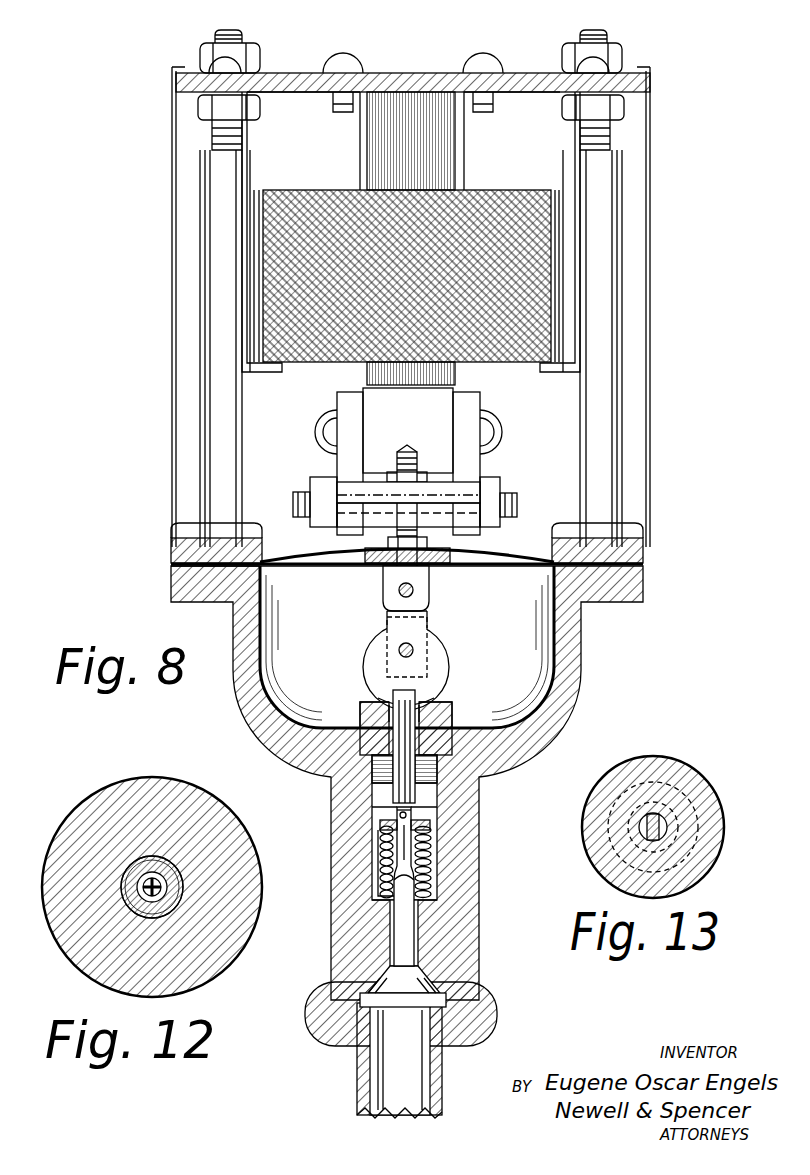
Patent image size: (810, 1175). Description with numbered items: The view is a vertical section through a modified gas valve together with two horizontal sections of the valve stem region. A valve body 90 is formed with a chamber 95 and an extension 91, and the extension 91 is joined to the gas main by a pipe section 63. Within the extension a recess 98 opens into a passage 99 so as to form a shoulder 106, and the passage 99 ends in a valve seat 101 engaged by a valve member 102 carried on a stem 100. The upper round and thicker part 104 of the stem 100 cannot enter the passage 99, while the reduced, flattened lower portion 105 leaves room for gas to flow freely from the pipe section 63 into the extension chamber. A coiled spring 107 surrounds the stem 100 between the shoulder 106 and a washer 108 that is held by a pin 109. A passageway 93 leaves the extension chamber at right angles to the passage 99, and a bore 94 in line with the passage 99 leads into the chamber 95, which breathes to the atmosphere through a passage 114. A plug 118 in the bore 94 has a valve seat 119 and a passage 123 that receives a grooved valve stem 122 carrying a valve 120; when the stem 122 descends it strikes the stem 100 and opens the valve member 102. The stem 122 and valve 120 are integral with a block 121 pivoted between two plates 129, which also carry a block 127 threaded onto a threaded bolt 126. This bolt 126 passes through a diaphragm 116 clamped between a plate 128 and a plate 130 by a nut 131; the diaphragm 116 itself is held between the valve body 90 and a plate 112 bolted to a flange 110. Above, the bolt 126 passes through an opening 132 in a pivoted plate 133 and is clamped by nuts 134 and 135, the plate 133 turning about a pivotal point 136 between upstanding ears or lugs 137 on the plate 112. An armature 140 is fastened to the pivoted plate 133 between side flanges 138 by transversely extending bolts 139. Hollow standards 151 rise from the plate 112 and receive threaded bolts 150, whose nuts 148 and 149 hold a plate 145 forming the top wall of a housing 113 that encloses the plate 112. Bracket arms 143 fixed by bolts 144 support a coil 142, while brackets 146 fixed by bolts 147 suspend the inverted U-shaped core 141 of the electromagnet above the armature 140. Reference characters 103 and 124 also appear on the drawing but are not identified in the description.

In FIG. 8, the pipe section 63 is at (357, 1078).
In FIG. 8, the valve body 90 is at (300, 625).
In FIG. 12, the valve body 90 is at (212, 966).
In FIG. 8, the extension 91 is at (490, 1006).
In FIG. 8, the passageway 93 is at (437, 808).
In FIG. 8, the bore 94 is at (375, 770).
In FIG. 8, the chamber 95 is at (497, 656).
In FIG. 8, the recess 98 is at (430, 856).
In FIG. 8, the passage 99 is at (420, 926).
In FIG. 13, the passage 99 is at (668, 825).
In FIG. 8, the stem 100 is at (397, 813).
In FIG. 8, the valve seat 101 is at (395, 975).
In FIG. 8, the valve member 102 is at (380, 988).
In FIG. 13, the valve member 102 is at (637, 810).
In FIG. 8, the valve disc 103 is at (345, 998).
In FIG. 13, the valve disc 103 is at (692, 796).
In FIG. 8, the upper round and thicker part 104 is at (397, 866).
In FIG. 8, the lower portion 105 is at (404, 928).
In FIG. 13, the lower portion 105 is at (622, 836).
In FIG. 8, the shoulder 106 is at (380, 898).
In FIG. 8, the coiled spring 107 is at (385, 848).
In FIG. 8, the washer 108 is at (430, 830).
In FIG. 8, the pin 109 is at (408, 815).
In FIG. 8, the flange 110 is at (645, 587).
In FIG. 8, the plate 112 is at (645, 552).
In FIG. 8, the housing 113 is at (172, 318).
In FIG. 8, the passage 114 is at (430, 636).
In FIG. 8, the diaphragm 116 is at (245, 550).
In FIG. 8, the plug 118 is at (393, 720).
In FIG. 12, the plug 118 is at (152, 860).
In FIG. 8, the valve seat 119 is at (391, 703).
In FIG. 12, the valve seat 119 is at (118, 928).
In FIG. 8, the valve 120 is at (428, 693).
In FIG. 8, the block 121 is at (416, 648).
In FIG. 8, the valve stem 122 is at (420, 706).
In FIG. 12, the valve stem 122 is at (132, 910).
In FIG. 8, the passage 123 is at (370, 720).
In FIG. 12, the passage 123 is at (122, 880).
In FIG. 8, the threaded plug 124 is at (378, 778).
In FIG. 12, the threaded plug 124 is at (135, 872).
In FIG. 8, the threaded bolt 126 is at (410, 445).
In FIG. 8, the block 127 is at (431, 587).
In FIG. 8, the plate 128 is at (383, 588).
In FIG. 8, the plates 129 is at (387, 621).
In FIG. 8, the plate 130 is at (430, 544).
In FIG. 8, the nut 131 is at (370, 556).
In FIG. 8, the opening 132 is at (490, 486).
In FIG. 8, the pivoted plate 133 is at (365, 486).
In FIG. 8, the nut 134 is at (427, 477).
In FIG. 8, the nut 135 is at (512, 508).
In FIG. 8, the pivotal point 136 is at (296, 500).
In FIG. 8, the upstanding ears or lugs 137 is at (318, 482).
In FIG. 8, the side flanges 138 is at (345, 402).
In FIG. 8, the transversely extending bolts 139 is at (318, 428).
In FIG. 8, the armature 140 is at (380, 388).
In FIG. 8, the core 141 is at (440, 161).
In FIG. 8, the coil 142 is at (285, 259).
In FIG. 8, the bracket arms 143 is at (242, 178).
In FIG. 8, the bolts 144 is at (240, 70).
In FIG. 8, the plate 145 is at (440, 76).
In FIG. 8, the brackets 146 is at (360, 148).
In FIG. 8, the bolts 147 is at (350, 58).
In FIG. 8, the nut 148 is at (205, 48).
In FIG. 8, the nut 149 is at (205, 106).
In FIG. 8, the threaded bolt 150 is at (240, 40).
In FIG. 8, the standards 151 is at (205, 418).